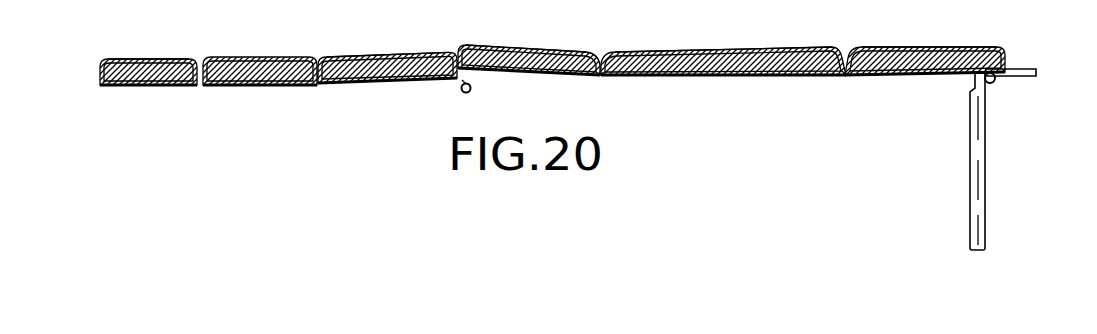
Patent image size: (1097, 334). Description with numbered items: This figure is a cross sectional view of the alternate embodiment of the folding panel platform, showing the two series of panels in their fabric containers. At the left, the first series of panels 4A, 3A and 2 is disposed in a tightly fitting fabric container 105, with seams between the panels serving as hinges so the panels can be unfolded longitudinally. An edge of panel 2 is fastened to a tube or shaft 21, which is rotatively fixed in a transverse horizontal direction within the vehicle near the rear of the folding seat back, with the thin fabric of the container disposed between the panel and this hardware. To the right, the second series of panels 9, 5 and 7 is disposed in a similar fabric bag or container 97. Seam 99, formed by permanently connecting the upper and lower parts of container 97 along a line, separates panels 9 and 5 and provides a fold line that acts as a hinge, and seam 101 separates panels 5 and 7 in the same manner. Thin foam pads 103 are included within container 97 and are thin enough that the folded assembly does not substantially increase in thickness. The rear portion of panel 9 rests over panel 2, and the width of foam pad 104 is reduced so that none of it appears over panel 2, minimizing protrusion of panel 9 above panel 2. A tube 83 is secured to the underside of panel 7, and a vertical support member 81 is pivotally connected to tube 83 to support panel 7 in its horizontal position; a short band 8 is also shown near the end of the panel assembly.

The panel 2 is at (368, 82).
The panel 3A is at (265, 82).
The panel 4A is at (150, 82).
The panel 5 is at (730, 73).
The panel 7 is at (910, 73).
The short band 8 is at (1025, 68).
The panel 9 is at (512, 58).
The tube or shaft 21 is at (470, 89).
The vertical support member 81 is at (978, 155).
The tube 83 is at (994, 82).
The fabric bag or container 97 is at (891, 44).
The seam 99 is at (600, 76).
The seam 101 is at (846, 76).
The thin foam pad 103 is at (555, 54).
The foam pad 104 is at (365, 58).
The container 105 is at (150, 54).